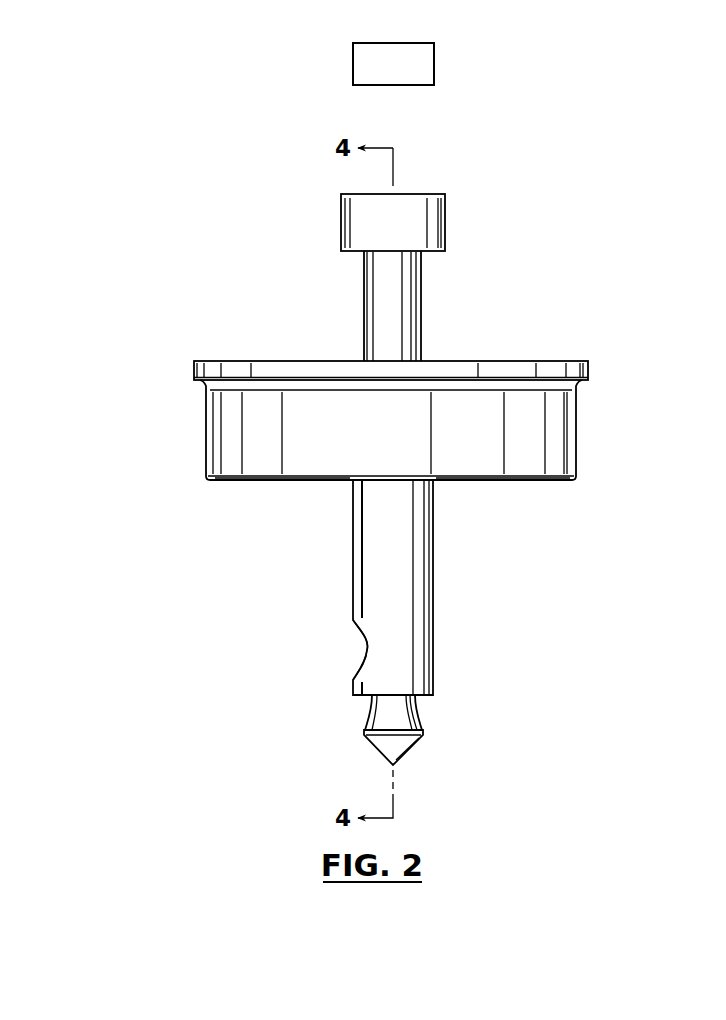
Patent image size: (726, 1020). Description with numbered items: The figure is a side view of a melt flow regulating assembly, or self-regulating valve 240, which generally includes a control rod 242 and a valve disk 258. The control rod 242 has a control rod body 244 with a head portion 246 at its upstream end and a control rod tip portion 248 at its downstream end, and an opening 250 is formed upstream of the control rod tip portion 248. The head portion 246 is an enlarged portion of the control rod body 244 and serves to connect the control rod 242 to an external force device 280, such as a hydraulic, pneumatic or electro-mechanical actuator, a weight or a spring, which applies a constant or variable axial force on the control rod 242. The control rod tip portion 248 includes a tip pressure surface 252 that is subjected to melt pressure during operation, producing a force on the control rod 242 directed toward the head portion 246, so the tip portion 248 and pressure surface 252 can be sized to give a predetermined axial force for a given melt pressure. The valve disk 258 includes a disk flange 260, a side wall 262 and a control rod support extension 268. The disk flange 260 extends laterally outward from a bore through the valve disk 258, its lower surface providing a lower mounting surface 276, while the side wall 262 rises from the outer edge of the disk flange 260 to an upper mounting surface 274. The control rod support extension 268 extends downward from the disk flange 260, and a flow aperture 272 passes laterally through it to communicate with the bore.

The self-regulating valve 240 is at (388, 465).
The control rod 242 is at (381, 274).
The control rod body 244 is at (422, 310).
The head portion 246 is at (430, 222).
The control rod tip portion 248 is at (412, 760).
The opening 250 is at (365, 712).
The tip pressure surface 252 is at (405, 750).
The valve disk 258 is at (388, 427).
The disk flange 260 is at (298, 498).
The side wall 262 is at (440, 488).
The control rod support extension 268 is at (375, 587).
The flow aperture 272 is at (345, 662).
The upper mounting surface 274 is at (578, 358).
The lower mounting surface 276 is at (527, 483).
The external force device 280 is at (393, 190).